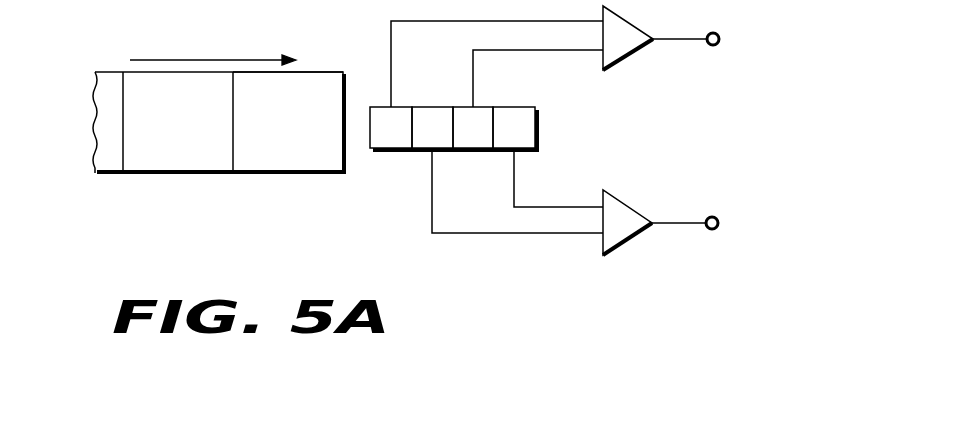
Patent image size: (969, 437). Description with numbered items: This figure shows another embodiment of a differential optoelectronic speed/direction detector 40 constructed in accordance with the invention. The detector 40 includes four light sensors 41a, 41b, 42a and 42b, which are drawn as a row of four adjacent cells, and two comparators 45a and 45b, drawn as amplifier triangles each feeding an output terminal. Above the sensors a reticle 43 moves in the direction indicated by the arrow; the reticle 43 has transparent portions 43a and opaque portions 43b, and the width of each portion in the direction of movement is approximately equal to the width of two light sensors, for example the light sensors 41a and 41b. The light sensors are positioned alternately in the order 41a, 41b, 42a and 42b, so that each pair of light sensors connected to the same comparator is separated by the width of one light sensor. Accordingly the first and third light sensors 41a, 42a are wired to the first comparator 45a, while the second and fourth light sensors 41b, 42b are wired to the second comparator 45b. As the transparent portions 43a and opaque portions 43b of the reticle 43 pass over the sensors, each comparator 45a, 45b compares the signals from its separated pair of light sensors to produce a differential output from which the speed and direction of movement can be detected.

The differential optoelectronic speed/direction detector 40 is at (105, 234).
The reticle 43 is at (97, 57).
The transparent portions 43a is at (196, 137).
The opaque portions 43b is at (305, 137).
The light sensor 41a is at (391, 150).
The light sensor 41b is at (432, 105).
The light sensor 42a is at (473, 150).
The light sensor 42b is at (514, 105).
The comparator 45a is at (628, 60).
The comparator 45b is at (630, 202).